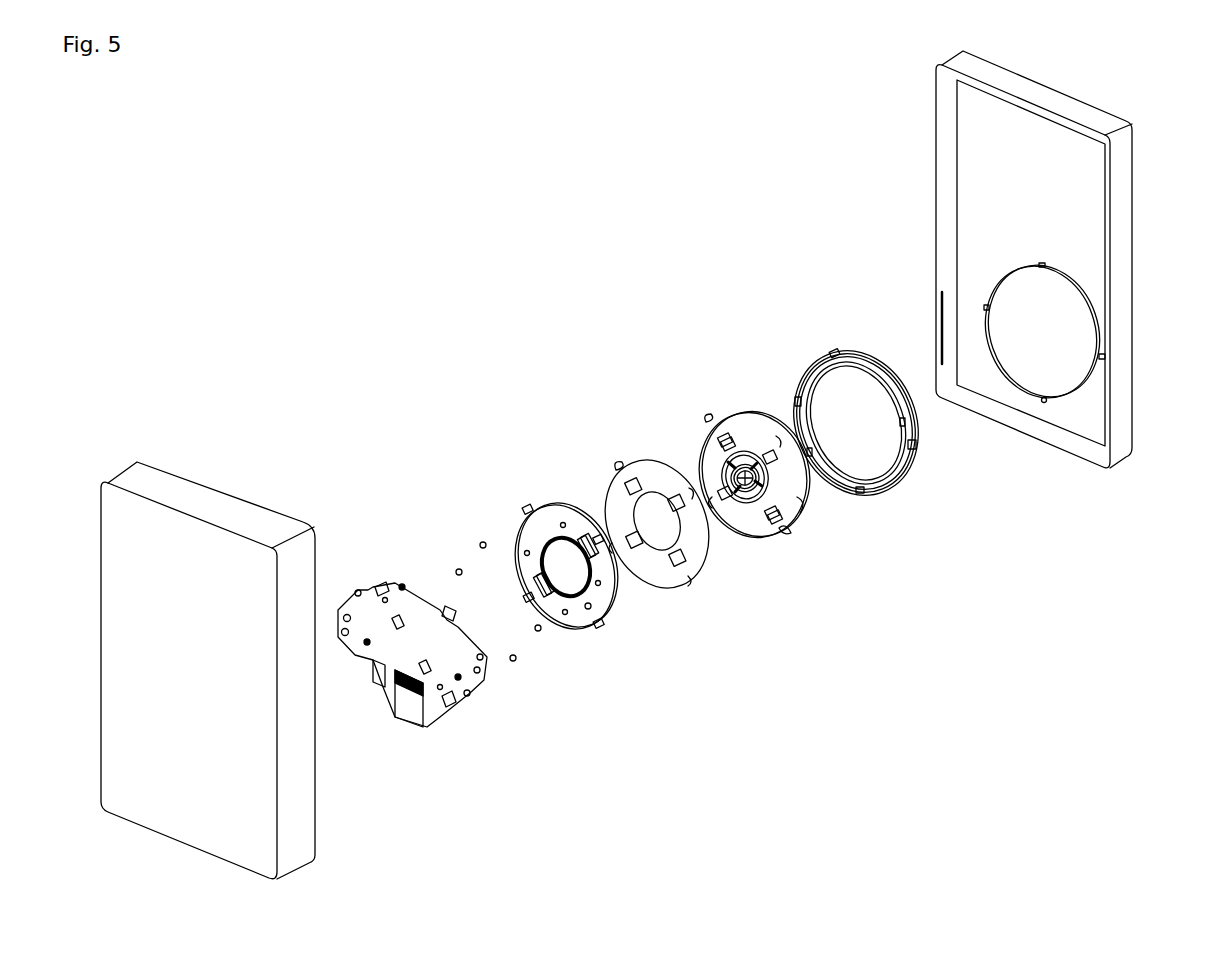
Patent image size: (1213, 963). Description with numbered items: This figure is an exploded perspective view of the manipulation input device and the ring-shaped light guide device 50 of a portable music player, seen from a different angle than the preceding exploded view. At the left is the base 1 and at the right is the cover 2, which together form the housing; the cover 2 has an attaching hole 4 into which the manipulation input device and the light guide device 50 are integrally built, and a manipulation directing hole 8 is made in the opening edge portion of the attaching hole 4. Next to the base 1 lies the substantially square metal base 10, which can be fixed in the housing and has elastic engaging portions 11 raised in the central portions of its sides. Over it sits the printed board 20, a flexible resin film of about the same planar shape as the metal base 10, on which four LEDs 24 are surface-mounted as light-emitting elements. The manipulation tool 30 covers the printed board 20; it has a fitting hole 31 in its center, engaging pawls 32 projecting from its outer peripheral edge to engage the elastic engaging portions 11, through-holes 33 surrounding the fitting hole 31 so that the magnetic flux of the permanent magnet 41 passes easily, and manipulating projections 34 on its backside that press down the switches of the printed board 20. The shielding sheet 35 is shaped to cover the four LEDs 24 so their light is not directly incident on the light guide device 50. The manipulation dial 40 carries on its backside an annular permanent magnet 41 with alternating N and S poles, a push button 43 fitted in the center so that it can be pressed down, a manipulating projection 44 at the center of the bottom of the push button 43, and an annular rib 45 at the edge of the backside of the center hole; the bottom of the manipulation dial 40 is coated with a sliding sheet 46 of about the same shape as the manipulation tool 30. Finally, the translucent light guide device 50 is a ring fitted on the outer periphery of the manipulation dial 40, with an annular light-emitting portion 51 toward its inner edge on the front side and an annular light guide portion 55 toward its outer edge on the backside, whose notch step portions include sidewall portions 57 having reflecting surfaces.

The base 1 is at (188, 492).
The cover 2 is at (1031, 87).
The attaching hole 4 is at (1069, 366).
The manipulation directing hole 8 is at (986, 308).
The metal base 10 is at (353, 607).
The elastic engaging portion 11 is at (445, 607).
The printed board 20 is at (413, 713).
The LED 24 is at (483, 543).
The manipulation tool 30 is at (545, 512).
The fitting hole 31 is at (545, 568).
The engaging pawl 32 is at (598, 535).
The through-hole 33 is at (592, 553).
The manipulating projection 34 is at (564, 522).
The shielding sheet 35 is at (654, 468).
The manipulation dial 40 is at (748, 418).
The permanent magnet 41 is at (725, 437).
The push button 43 is at (745, 495).
The manipulating projection 44 is at (745, 478).
The annular rib 45 is at (749, 455).
The sliding sheet 46 is at (790, 523).
The light guide device 50 is at (890, 382).
The light-emitting portion 51 is at (818, 424).
The light guide portion 55 is at (855, 423).
The sidewall portion 57 is at (837, 351).